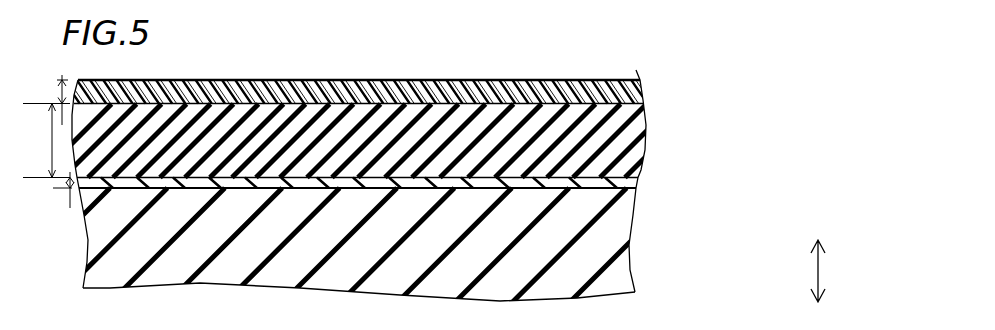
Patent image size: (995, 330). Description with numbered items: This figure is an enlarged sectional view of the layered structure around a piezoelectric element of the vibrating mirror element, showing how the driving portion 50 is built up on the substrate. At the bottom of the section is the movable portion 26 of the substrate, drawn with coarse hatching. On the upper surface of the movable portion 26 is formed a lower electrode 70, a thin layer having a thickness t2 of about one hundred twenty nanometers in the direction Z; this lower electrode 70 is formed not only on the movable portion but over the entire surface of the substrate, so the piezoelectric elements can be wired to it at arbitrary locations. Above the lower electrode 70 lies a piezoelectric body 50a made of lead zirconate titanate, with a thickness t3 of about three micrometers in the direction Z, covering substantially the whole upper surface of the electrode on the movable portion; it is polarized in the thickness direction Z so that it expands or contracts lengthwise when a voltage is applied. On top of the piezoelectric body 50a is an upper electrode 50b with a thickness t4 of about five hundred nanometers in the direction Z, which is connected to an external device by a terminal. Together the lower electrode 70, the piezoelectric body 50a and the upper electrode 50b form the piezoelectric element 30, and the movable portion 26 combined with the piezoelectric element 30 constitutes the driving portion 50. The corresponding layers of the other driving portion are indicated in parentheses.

The magnetic core (50/60) 50 is at (458, 155).
The soft magnetic layer stack (30/40) 30 is at (428, 137).
The upper soft magnetic layer (50b/60b) 50b is at (613, 94).
The lower soft magnetic layer (50a/60a) 50a is at (608, 137).
The intermediate adhesion layer 70 is at (607, 181).
The substrate / base layer (26/27) 26 is at (610, 219).
The thickness of layer 50b t4 is at (50, 100).
The thickness of layer 50a t3 is at (46, 141).
The thickness of layer 70 t2 is at (56, 190).
The Z direction Z is at (827, 271).